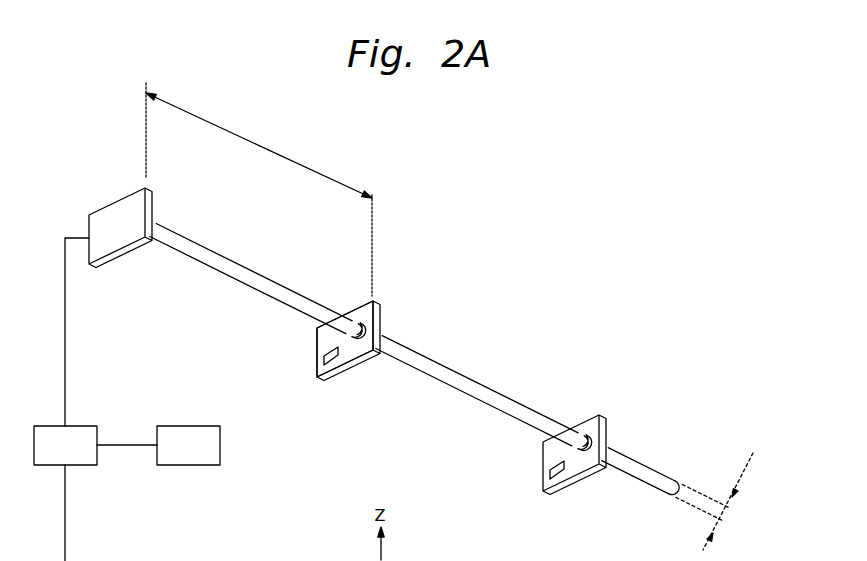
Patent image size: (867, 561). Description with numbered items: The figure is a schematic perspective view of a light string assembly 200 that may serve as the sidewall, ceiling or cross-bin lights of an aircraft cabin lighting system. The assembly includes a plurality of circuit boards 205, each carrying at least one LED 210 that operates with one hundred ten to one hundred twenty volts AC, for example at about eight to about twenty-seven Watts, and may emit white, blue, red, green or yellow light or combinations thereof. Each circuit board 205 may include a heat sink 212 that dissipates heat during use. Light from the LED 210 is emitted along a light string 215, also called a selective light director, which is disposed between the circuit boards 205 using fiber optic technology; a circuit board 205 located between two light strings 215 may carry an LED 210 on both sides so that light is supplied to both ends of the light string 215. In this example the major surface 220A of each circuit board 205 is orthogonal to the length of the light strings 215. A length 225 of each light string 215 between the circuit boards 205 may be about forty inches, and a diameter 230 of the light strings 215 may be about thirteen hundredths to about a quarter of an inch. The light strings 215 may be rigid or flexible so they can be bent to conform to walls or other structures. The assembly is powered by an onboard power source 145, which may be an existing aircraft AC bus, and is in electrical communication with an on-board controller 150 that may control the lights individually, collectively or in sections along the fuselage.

The light string assembly 200 is at (391, 356).
The circuit board 205 is at (313, 337).
The LED 210 is at (350, 320).
The heat sink 212 is at (324, 357).
The light string 215 is at (233, 260).
The major surface 220A is at (323, 337).
The length 225 is at (258, 147).
The diameter 230 is at (723, 515).
The on-board controller 150 is at (65, 399).
The onboard power source 145 is at (158, 445).